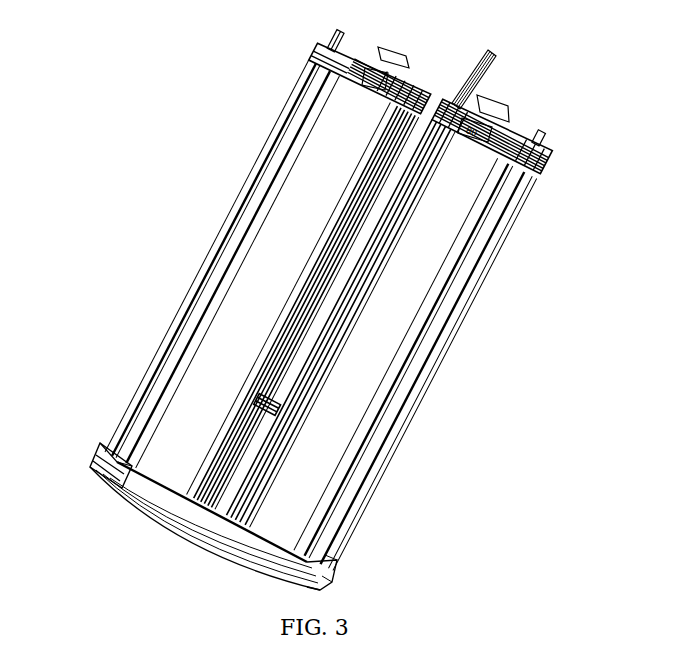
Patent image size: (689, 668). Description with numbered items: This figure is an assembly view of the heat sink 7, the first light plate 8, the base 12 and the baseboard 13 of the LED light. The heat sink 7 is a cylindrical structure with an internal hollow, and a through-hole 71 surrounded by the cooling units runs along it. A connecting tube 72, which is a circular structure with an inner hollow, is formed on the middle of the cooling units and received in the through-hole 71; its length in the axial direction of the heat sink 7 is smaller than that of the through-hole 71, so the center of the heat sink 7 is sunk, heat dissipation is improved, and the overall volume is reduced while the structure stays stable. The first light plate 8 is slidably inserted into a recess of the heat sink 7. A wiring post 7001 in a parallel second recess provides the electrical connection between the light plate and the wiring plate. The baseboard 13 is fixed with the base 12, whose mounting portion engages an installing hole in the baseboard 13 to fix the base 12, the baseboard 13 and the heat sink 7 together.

The heat sink 7 is at (243, 177).
The through-hole 71 is at (357, 237).
The connecting tube 72 is at (257, 427).
The first light plate 8 is at (313, 83).
The wiring post 7001 is at (492, 75).
The base 12 is at (130, 483).
The baseboard 13 is at (163, 533).